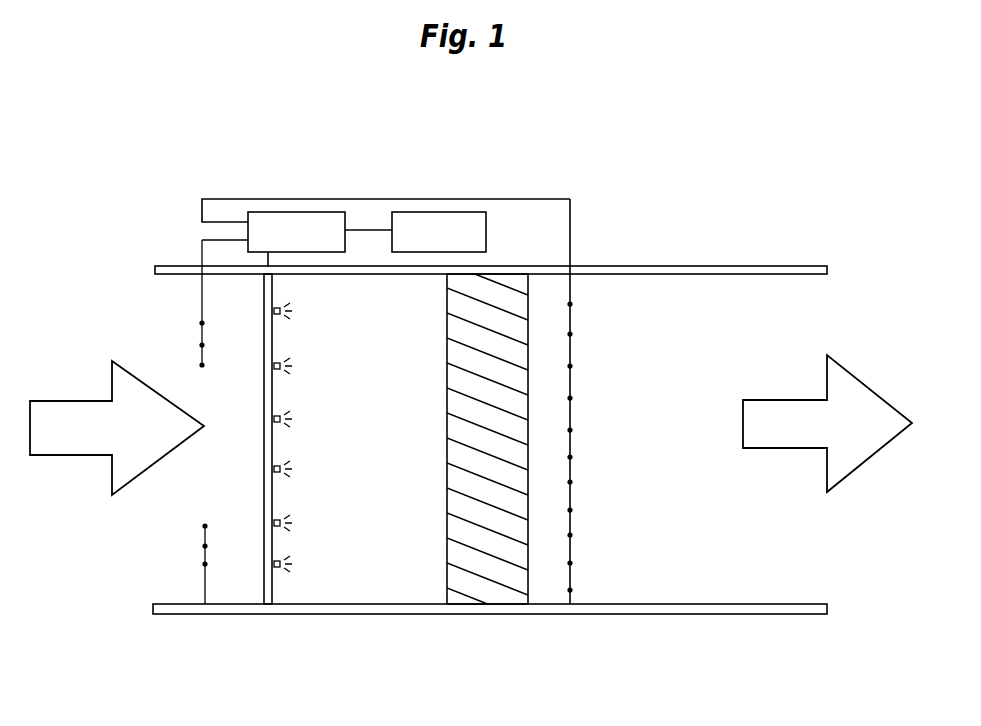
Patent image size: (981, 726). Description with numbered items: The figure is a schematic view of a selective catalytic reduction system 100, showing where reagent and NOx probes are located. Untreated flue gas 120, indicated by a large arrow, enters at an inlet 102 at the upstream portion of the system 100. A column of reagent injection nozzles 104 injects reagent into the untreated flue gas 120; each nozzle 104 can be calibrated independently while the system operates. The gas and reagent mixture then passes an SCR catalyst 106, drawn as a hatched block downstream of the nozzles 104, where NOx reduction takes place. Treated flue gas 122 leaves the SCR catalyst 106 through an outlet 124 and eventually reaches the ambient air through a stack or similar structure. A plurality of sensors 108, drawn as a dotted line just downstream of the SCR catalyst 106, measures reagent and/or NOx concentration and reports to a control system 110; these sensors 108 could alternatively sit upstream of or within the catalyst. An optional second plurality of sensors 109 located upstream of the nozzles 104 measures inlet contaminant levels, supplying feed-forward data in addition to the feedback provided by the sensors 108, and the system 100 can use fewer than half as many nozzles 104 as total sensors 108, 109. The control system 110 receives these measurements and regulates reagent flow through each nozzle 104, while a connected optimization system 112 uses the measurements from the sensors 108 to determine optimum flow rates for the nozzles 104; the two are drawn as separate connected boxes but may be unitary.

The SCR system 100 is at (236, 650).
The inlet 102 is at (165, 482).
The reagent injection nozzle 104 is at (279, 309).
The SCR catalyst 106 is at (520, 575).
The sensors 108 is at (572, 352).
The upstream sensors 109 is at (203, 322).
The control system 110 is at (315, 245).
The optimization system 112 is at (457, 245).
The untreated flue gas 120 is at (97, 446).
The treated flue gas 122 is at (832, 439).
The outlet 124 is at (805, 536).